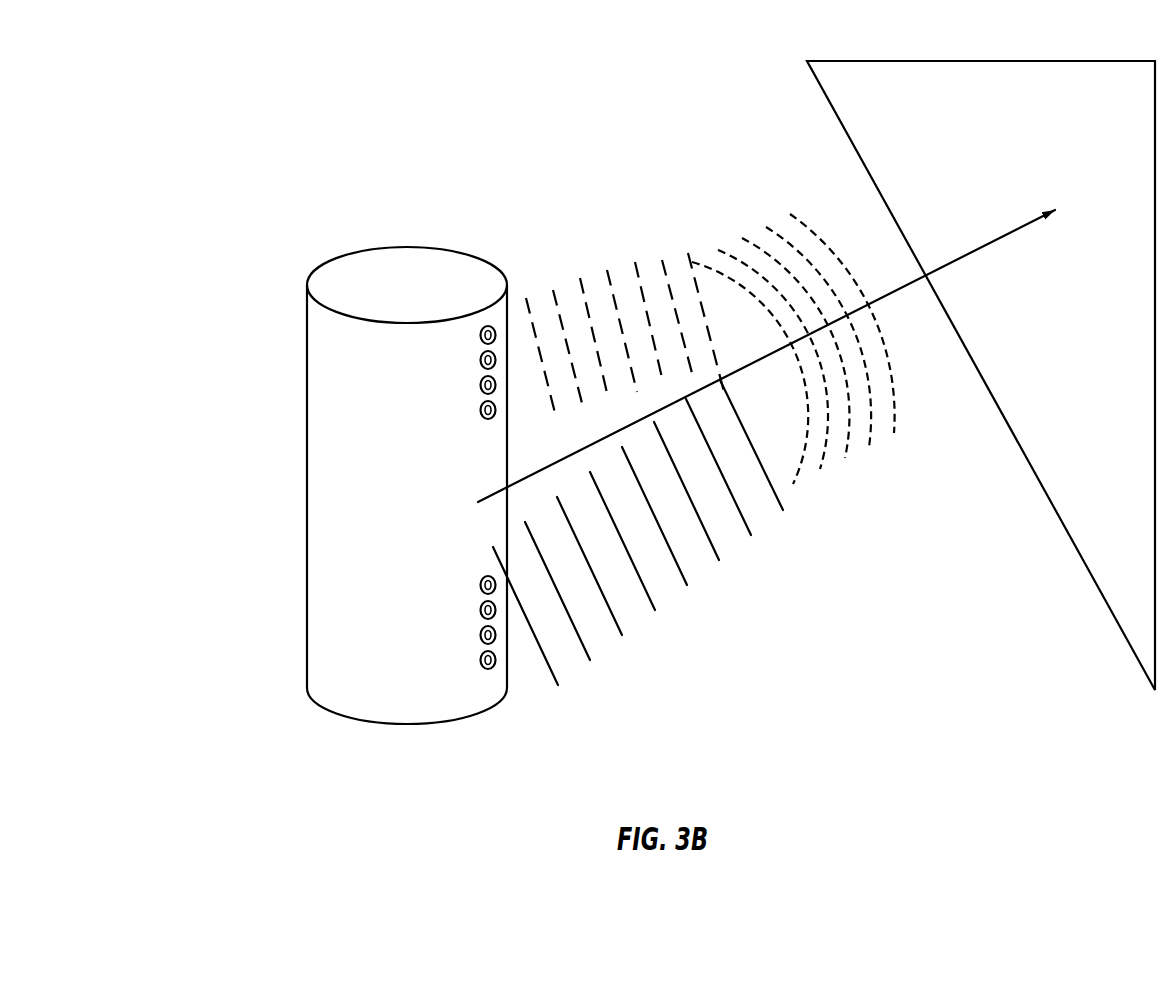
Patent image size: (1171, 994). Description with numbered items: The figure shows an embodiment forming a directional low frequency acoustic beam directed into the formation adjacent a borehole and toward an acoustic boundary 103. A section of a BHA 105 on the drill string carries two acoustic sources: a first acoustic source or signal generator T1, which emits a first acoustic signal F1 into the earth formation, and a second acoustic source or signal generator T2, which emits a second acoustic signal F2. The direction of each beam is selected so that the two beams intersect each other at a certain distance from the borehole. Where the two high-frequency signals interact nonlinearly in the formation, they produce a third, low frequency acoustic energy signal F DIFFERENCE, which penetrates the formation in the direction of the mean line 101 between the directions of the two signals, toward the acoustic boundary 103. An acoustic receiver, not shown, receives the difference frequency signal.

The mean line 101 is at (992, 246).
The acoustic boundary 103 is at (829, 57).
The BHA 105 is at (275, 247).
The first acoustic source T1 is at (476, 327).
The second acoustic source T2 is at (476, 575).
The first acoustic signal F1 is at (631, 266).
The second acoustic signal F2 is at (628, 638).
The low frequency acoustic energy signal F DIFFERENCE is at (794, 485).